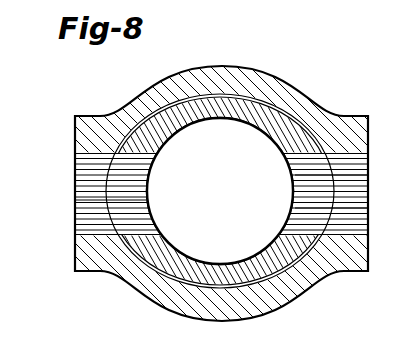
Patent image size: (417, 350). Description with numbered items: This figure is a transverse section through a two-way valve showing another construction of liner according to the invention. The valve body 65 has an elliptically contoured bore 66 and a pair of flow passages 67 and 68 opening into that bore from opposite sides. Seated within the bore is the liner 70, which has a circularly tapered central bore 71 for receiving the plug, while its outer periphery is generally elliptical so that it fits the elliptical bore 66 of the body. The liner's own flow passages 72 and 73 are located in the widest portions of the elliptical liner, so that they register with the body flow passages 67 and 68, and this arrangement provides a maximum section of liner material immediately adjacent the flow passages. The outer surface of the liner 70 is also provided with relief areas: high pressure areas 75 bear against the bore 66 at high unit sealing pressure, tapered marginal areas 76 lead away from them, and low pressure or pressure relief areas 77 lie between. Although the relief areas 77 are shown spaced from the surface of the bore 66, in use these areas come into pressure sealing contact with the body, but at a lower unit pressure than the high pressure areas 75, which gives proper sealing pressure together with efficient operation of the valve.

The valve body 65 is at (262, 74).
The elliptically contoured bore 66 is at (277, 108).
The flow passage 67 is at (85, 177).
The flow passage 68 is at (352, 200).
The liner 70 is at (183, 122).
The circularly tapered central bore 71 is at (226, 268).
The flow passage 72 is at (123, 213).
The flow passage 73 is at (335, 172).
The high pressure area 75 is at (117, 247).
The tapered marginal area 76 is at (143, 290).
The pressure relief area 77 is at (213, 96).